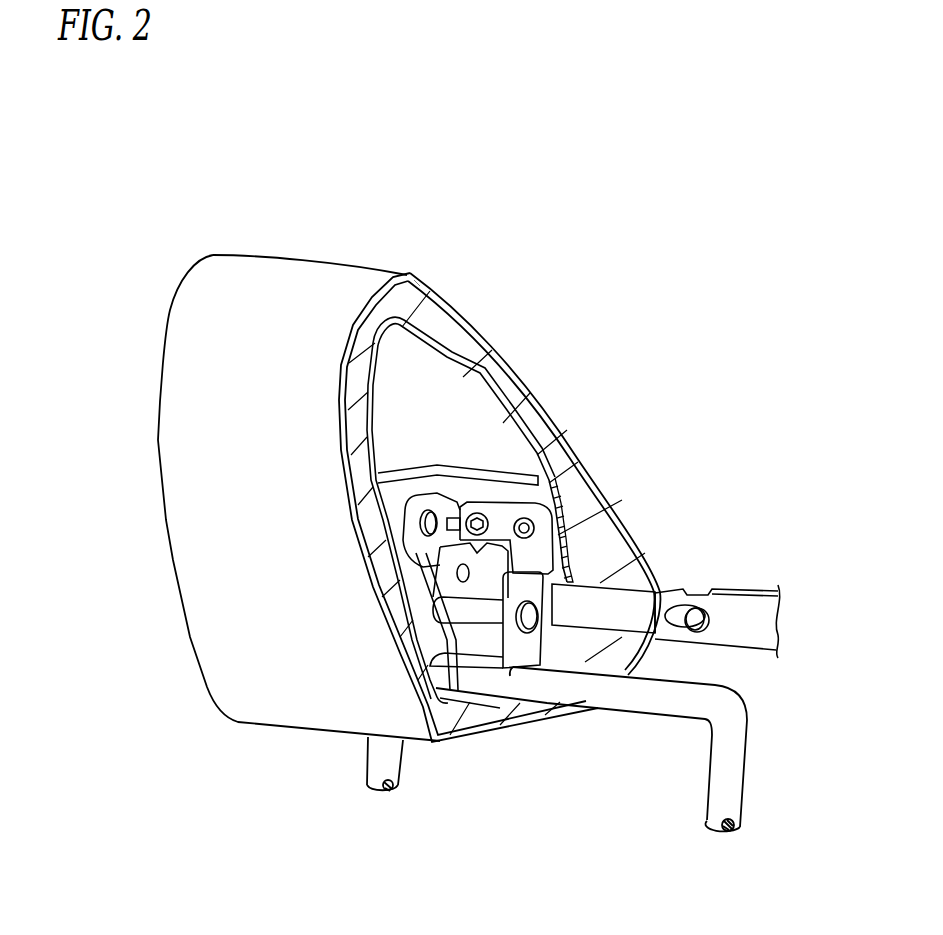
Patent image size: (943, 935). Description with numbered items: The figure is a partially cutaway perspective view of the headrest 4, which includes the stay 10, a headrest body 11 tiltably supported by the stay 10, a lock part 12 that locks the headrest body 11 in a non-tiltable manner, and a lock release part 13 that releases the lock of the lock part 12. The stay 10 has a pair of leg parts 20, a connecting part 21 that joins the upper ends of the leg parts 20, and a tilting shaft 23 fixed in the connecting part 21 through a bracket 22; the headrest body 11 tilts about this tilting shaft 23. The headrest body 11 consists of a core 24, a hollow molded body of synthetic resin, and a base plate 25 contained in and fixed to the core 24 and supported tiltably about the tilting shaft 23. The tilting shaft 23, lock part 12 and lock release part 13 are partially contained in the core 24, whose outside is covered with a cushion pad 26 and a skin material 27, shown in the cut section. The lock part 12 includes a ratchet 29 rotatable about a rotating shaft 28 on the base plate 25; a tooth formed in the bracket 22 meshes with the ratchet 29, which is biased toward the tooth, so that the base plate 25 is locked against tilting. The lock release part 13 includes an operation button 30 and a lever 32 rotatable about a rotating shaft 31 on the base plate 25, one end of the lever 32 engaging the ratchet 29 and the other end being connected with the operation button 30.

The headrest 4 is at (353, 170).
The stay 10 is at (752, 718).
The headrest body 11 is at (470, 318).
The lock part 12 is at (420, 561).
The lock release part 13 is at (666, 586).
The leg parts 20 is at (370, 767).
The connecting part 21 is at (664, 713).
The bracket 22 is at (512, 662).
The tilting shaft 23 is at (480, 620).
The core 24 is at (490, 363).
The base plate 25 is at (493, 469).
The cushion pad 26 is at (532, 390).
The skin material 27 is at (547, 412).
The rotating shaft 28 is at (428, 517).
The ratchet 29 is at (437, 493).
The operation button 30 is at (738, 592).
The rotating shaft 31 is at (600, 500).
The lever 32 is at (645, 556).